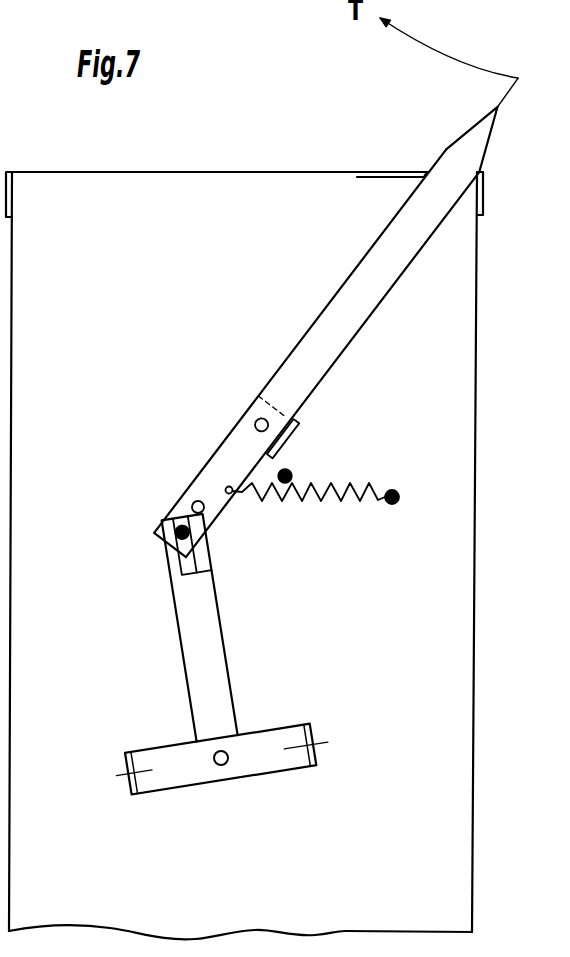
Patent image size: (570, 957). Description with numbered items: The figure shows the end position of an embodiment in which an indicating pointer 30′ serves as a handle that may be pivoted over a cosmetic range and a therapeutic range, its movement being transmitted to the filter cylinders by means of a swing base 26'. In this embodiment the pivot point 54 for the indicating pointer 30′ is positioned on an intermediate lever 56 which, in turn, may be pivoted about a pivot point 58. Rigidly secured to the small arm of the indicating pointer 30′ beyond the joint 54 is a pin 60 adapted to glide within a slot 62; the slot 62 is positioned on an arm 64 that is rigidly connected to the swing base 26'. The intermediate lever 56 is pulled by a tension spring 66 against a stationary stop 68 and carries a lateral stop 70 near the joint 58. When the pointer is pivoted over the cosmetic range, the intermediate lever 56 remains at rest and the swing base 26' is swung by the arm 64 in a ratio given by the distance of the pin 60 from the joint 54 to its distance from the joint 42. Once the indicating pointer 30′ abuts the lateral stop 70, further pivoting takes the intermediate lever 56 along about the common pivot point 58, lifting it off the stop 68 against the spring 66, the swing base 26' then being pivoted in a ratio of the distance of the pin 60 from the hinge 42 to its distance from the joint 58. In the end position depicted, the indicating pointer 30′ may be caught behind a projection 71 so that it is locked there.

The projection 71 is at (395, 172).
The intermediate lever 56 is at (222, 463).
The indicating pointer 30′ is at (350, 325).
The pivot point 58 is at (256, 419).
The lateral stop 70 is at (297, 431).
The tension spring 66 is at (325, 497).
The stationary stop 68 is at (292, 472).
The arm 64 is at (187, 642).
The swing base 26' is at (225, 780).
The joint 42 is at (218, 767).
The slot 62 is at (192, 563).
The pin 60 is at (162, 547).
The pivot point 54 is at (193, 504).